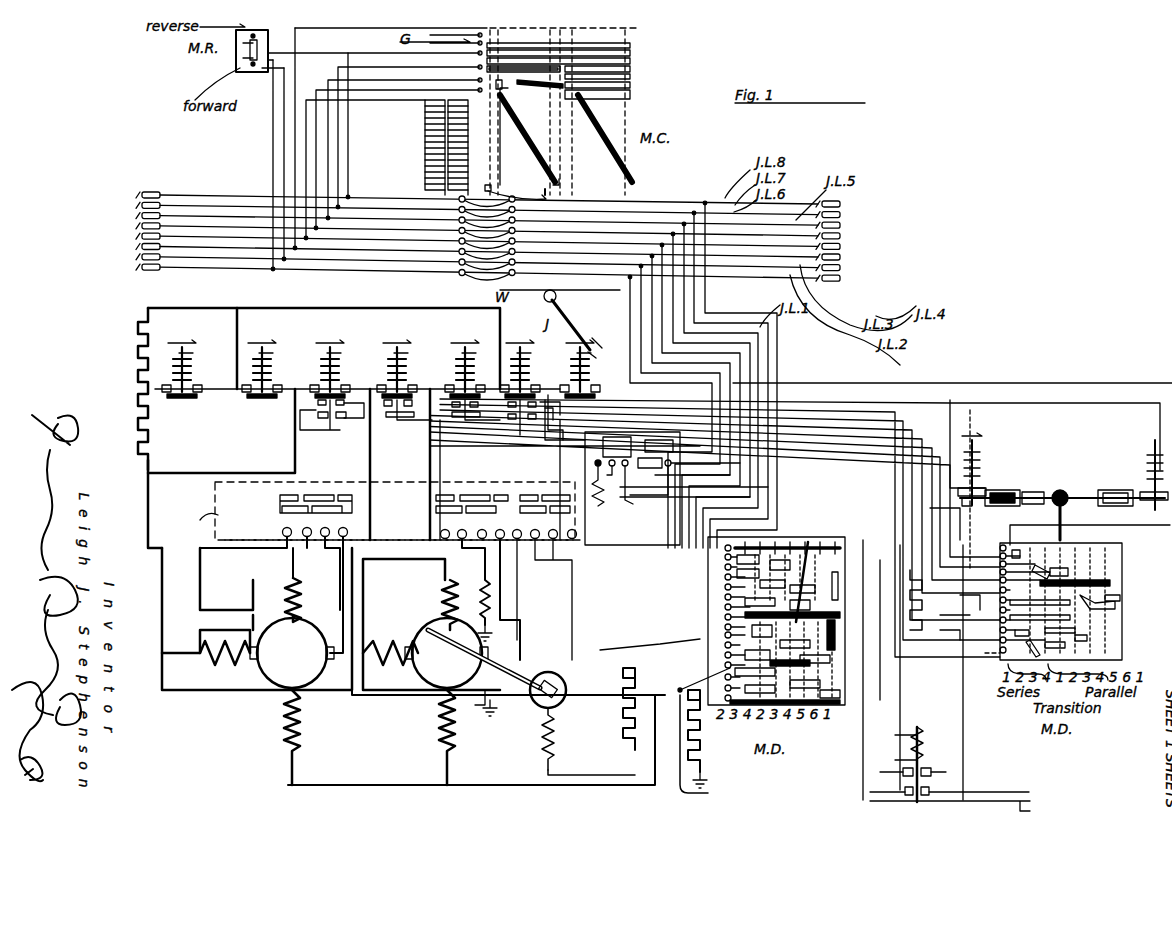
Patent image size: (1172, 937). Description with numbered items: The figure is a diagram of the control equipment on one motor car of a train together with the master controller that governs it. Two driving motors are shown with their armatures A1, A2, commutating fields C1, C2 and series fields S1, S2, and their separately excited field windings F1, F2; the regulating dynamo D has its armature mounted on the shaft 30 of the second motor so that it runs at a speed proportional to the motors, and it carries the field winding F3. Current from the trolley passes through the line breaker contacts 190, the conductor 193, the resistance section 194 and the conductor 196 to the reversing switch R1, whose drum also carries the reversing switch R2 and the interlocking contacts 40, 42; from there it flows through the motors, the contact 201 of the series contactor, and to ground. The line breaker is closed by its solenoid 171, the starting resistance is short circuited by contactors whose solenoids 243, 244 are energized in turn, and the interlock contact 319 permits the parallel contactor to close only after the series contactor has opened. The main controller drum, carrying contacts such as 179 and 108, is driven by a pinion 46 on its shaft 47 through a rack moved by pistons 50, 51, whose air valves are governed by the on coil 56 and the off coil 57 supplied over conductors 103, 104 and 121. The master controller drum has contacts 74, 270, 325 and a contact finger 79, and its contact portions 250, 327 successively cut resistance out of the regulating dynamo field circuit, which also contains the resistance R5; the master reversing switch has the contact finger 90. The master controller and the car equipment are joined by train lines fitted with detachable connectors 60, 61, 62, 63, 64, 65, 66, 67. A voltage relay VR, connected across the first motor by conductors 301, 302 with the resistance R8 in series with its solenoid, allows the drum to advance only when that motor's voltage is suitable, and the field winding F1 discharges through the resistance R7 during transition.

The detachable connector 60 is at (846, 280).
The detachable connector 61 is at (846, 268).
The detachable connector 62 is at (846, 257).
The detachable connector 63 is at (846, 246).
The detachable connector 64 is at (846, 236).
The detachable connector 65 is at (846, 225).
The detachable connector 66 is at (846, 214).
The detachable connector 67 is at (842, 204).
The contact finger 90 is at (252, 68).
The contact finger 79 is at (644, 53).
The contact 74 is at (632, 61).
The contact 270 is at (632, 76).
The contact 325 is at (632, 86).
The contact portion 250 is at (540, 133).
The contact portion 327 is at (600, 130).
The conductor 193 is at (324, 340).
The resistance section 194 is at (138, 352).
The solenoid 243 is at (192, 363).
The solenoid 244 is at (272, 363).
The contact 201 is at (407, 365).
The interlock contact 319 is at (442, 400).
The line breaker contact 190 is at (531, 367).
The solenoid 171 is at (583, 369).
The conductor 301 is at (547, 603).
The reversing switch R1 is at (352, 510).
The reversing switch R2 is at (483, 511).
The conductor 196 is at (228, 581).
The armature A1 is at (292, 653).
The armature A2 is at (446, 653).
The commutating field C1 is at (212, 670).
The commutating field C2 is at (390, 670).
The series field winding S1 is at (283, 585).
The series field winding S2 is at (434, 598).
The field winding F1 is at (278, 740).
The field winding F2 is at (435, 745).
The field winding F3 is at (530, 739).
The regulating dynamo D is at (548, 680).
The shaft 30 is at (484, 663).
The resistance R5 is at (618, 730).
The resistance R7 is at (702, 742).
The resistance R8 is at (908, 600).
The interlocking contact 40 is at (632, 488).
The interlocking contact 42 is at (659, 446).
The contact 179 is at (842, 550).
The contact 108 is at (1061, 601).
The on coil 56 is at (985, 462).
The off coil 57 is at (1148, 460).
The pinion 46 is at (1062, 490).
The piston 50 is at (1000, 488).
The piston 51 is at (1115, 487).
The shaft 47 is at (1065, 520).
The conductor 121 is at (1055, 539).
The conductor 302 is at (731, 639).
The voltage relay VR is at (950, 769).
The conductor 104 is at (780, 383).
The conductor 103 is at (800, 427).